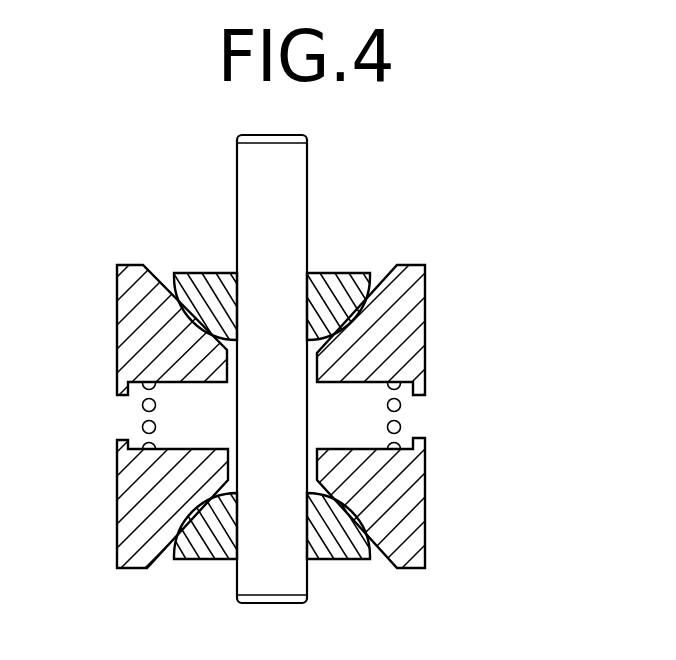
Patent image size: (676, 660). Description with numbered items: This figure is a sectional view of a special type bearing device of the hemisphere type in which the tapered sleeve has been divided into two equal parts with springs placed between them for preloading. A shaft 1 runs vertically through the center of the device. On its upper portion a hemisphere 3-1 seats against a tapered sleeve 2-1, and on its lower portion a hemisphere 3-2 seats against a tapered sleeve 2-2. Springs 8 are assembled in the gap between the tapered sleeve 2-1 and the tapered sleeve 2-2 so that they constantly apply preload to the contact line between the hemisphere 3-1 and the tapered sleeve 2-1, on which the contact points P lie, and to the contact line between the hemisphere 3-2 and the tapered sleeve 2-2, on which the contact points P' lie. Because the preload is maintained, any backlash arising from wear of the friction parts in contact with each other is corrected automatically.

The shaft 1 is at (292, 191).
The tapered sleeve 2-1 is at (400, 302).
The tapered sleeve 2-2 is at (410, 477).
The hemisphere 3-1 is at (207, 287).
The hemisphere 3-2 is at (338, 530).
The springs 8 is at (399, 423).
The contact points P is at (139, 322).
The contact points P' is at (129, 486).